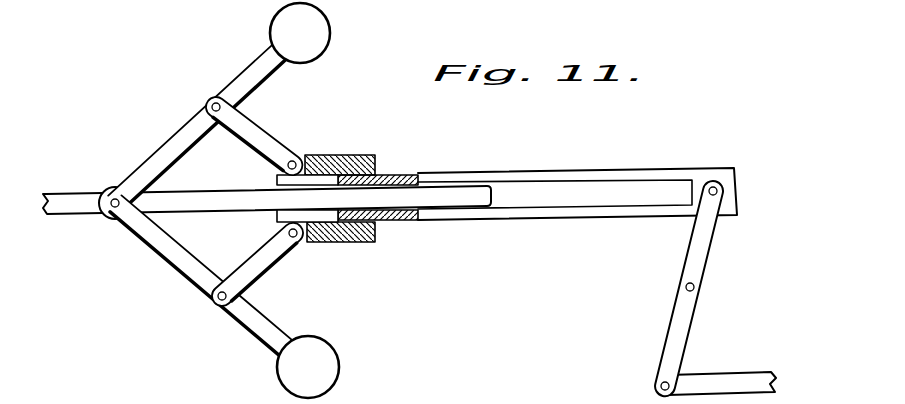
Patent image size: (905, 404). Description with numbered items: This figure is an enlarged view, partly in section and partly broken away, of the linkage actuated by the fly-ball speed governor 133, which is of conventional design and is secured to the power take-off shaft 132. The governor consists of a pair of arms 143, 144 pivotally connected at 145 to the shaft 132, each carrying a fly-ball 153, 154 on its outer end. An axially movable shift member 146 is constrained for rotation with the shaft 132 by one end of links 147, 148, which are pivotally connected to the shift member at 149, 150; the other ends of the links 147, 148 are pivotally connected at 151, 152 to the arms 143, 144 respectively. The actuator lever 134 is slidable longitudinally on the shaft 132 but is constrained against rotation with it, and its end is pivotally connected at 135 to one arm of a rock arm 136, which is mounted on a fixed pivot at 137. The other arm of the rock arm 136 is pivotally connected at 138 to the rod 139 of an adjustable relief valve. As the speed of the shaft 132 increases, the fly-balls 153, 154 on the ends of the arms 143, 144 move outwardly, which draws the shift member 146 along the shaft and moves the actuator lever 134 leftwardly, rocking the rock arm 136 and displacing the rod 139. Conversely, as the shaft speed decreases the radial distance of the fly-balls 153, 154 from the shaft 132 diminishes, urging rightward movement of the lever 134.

The power take-off shaft 132 is at (63, 204).
The fly-ball speed governor 133 is at (193, 106).
The actuator lever 134 is at (467, 178).
The pivotal connection 135 is at (718, 189).
The rock arm 136 is at (675, 318).
The fixed pivot 137 is at (694, 286).
The pivotal connection 138 is at (669, 383).
The rod 139 is at (738, 379).
The arm 143 is at (167, 148).
The arm 144 is at (184, 266).
The pivotal connection 145 is at (111, 217).
The shift member 146 is at (349, 157).
The link 147 is at (255, 137).
The link 148 is at (266, 263).
The pivotal connection 149 is at (296, 159).
The pivotal connection 150 is at (299, 240).
The pivotal connection 151 is at (216, 103).
The pivotal connection 152 is at (221, 301).
The fly-ball 153 is at (284, 44).
The fly-ball 154 is at (292, 378).